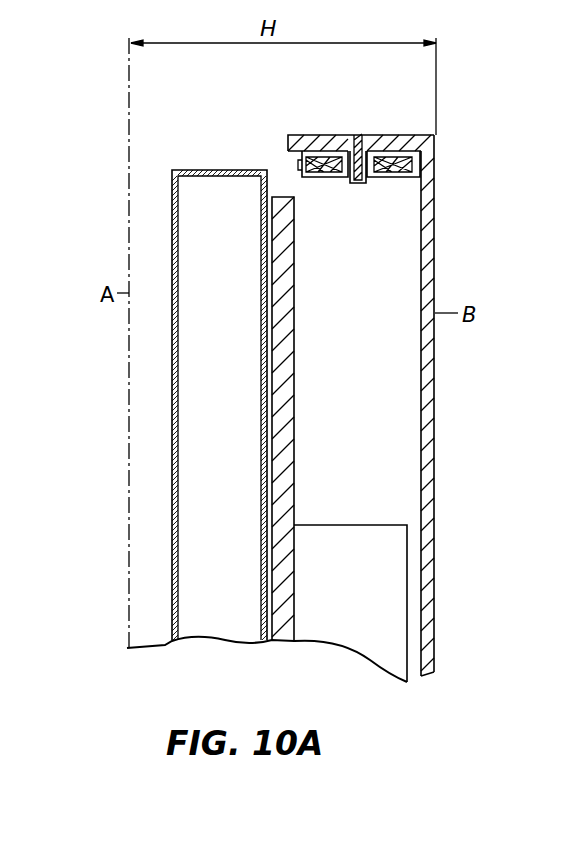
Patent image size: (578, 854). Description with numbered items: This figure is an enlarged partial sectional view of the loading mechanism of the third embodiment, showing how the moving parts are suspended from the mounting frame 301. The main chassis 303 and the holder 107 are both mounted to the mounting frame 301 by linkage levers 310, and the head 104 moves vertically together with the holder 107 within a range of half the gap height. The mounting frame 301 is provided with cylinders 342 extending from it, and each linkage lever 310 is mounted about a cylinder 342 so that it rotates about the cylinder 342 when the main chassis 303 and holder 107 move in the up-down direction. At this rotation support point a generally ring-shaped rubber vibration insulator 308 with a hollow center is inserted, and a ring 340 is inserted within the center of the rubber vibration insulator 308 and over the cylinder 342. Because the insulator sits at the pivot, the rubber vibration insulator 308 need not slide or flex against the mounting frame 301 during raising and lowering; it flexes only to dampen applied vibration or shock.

The holder 107 is at (172, 489).
The main chassis 303 is at (290, 607).
The head 104 is at (392, 552).
The mounting frame 301 is at (434, 415).
The linkage lever 310 is at (410, 154).
The cylinder 342 is at (367, 183).
The ring 340 is at (342, 178).
The rubber vibration insulator 308 is at (388, 174).